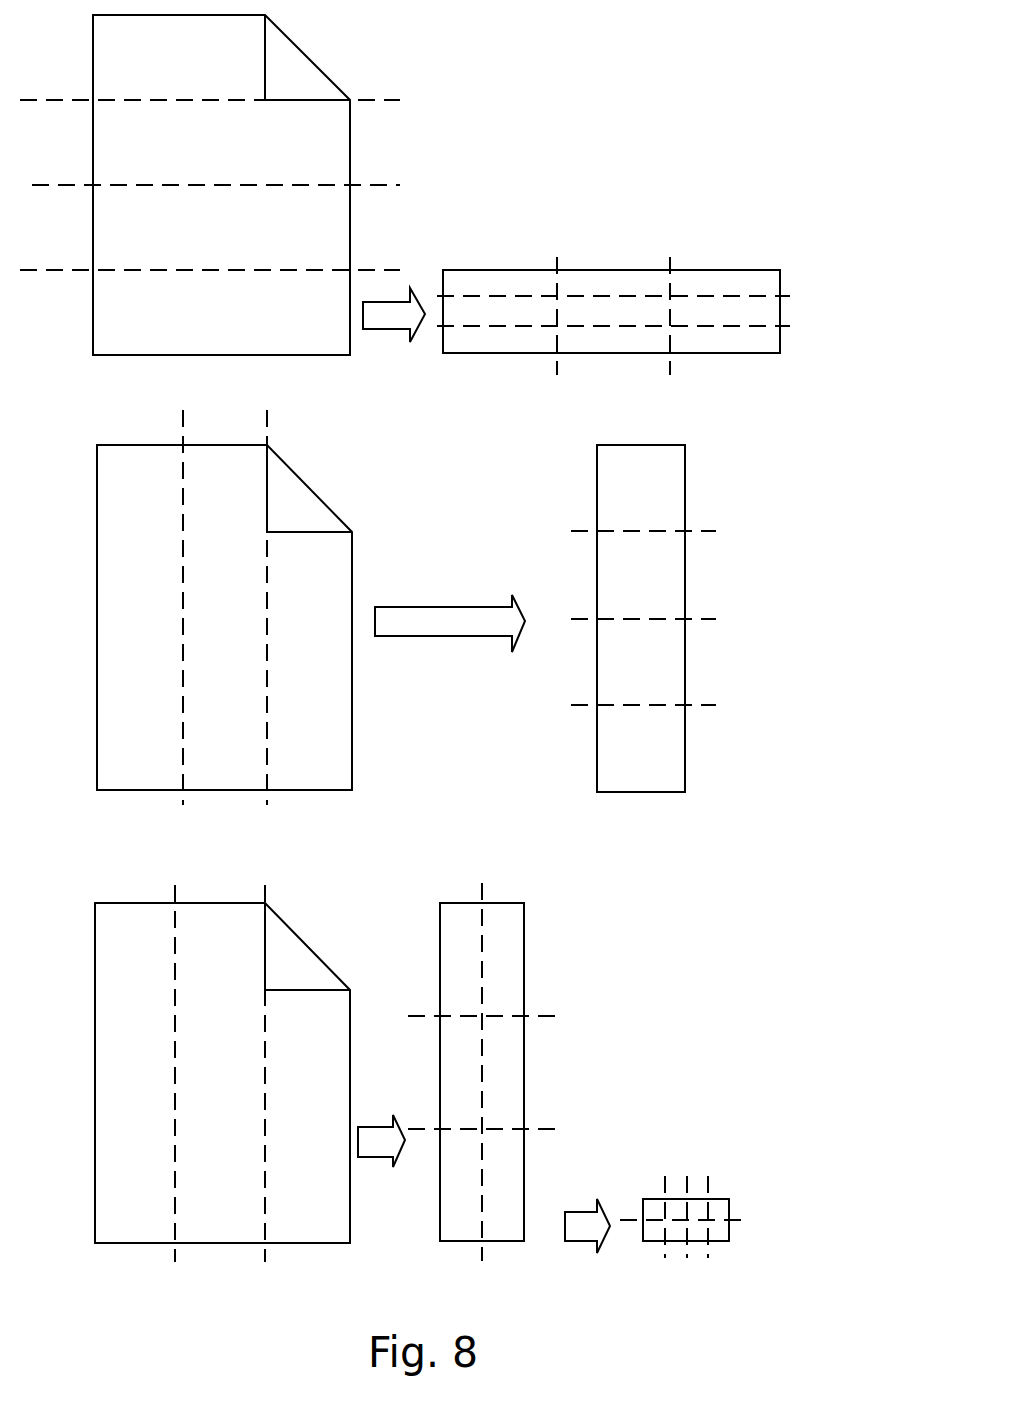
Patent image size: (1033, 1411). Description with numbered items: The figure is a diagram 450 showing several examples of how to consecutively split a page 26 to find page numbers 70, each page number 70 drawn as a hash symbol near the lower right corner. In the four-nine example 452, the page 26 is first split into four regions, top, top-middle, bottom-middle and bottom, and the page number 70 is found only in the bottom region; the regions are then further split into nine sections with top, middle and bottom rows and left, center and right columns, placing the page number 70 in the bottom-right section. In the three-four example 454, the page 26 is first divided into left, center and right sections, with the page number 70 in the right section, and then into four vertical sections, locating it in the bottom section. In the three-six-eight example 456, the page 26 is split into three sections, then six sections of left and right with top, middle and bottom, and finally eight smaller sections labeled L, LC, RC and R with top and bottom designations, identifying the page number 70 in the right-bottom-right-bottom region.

The page 26 is at (315, 62).
The page number 70 is at (338, 344).
The diagram 450 is at (675, 56).
The 4-9 Example 452 is at (520, 58).
The 3-4 Example 454 is at (485, 462).
The 3-6-8 Example 456 is at (772, 897).